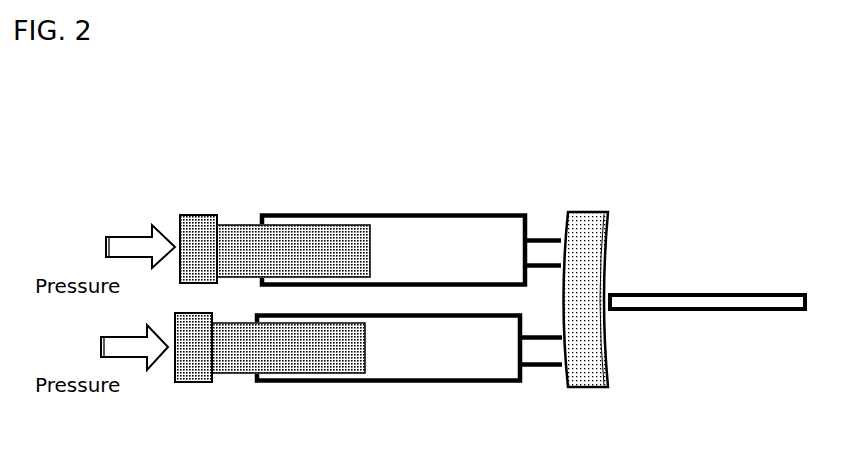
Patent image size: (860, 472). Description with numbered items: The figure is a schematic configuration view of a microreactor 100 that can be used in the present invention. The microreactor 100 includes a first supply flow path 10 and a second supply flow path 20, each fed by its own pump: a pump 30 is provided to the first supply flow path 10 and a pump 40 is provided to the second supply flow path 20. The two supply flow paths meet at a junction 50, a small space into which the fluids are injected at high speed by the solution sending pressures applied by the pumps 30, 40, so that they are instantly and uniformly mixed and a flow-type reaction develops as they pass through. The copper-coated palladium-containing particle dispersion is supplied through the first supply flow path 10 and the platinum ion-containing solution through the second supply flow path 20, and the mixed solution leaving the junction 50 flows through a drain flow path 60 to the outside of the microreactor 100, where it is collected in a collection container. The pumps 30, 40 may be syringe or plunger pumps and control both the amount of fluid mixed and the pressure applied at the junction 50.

The microreactor 100 is at (166, 184).
The first supply flow path 10 is at (548, 248).
The second supply flow path 20 is at (542, 355).
The pump 30 is at (242, 242).
The pump 40 is at (242, 360).
The junction 50 is at (587, 362).
The drain flow path 60 is at (718, 311).